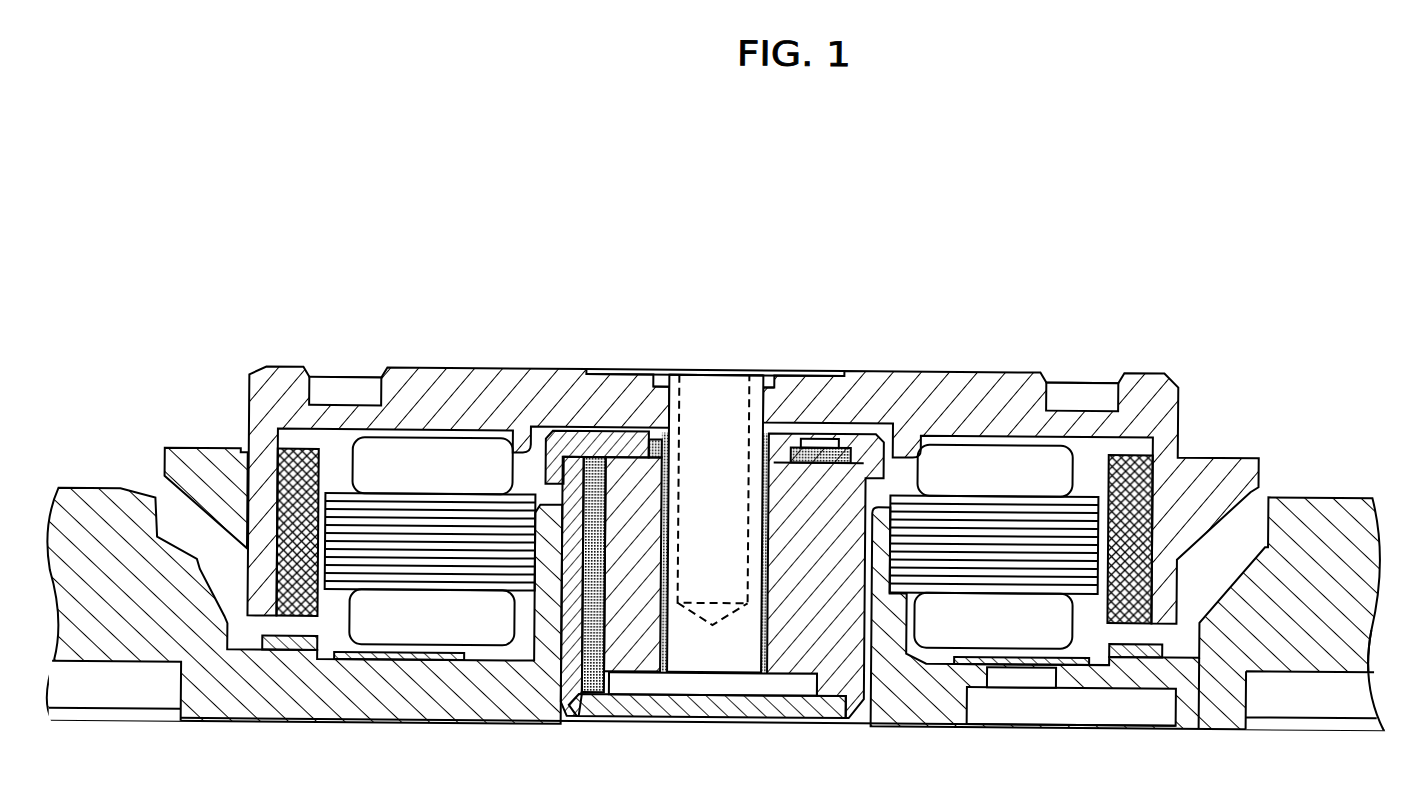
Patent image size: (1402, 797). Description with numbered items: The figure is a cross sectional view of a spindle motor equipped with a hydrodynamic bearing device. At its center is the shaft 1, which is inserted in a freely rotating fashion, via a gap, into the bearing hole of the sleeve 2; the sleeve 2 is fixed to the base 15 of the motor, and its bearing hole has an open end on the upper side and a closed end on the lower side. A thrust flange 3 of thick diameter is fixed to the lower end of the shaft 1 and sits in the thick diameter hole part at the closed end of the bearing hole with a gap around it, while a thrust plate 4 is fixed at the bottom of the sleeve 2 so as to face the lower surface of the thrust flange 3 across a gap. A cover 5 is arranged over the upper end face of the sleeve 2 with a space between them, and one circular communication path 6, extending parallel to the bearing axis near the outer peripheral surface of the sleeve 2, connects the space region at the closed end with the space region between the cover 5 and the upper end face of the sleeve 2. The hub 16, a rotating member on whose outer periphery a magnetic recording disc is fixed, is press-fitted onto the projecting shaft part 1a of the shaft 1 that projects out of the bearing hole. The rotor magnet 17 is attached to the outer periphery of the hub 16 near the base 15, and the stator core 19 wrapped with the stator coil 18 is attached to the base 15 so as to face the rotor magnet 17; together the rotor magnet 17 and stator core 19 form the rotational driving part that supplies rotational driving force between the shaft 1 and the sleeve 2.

The shaft 1 is at (712, 402).
The projecting shaft part 1a is at (668, 389).
The sleeve 2 is at (833, 657).
The thrust flange 3 is at (760, 686).
The thrust plate 4 is at (700, 706).
The cover 5 is at (585, 434).
The circular communication path 6 is at (540, 700).
The base 15 is at (272, 708).
The hub 16 is at (893, 378).
The rotor magnet 17 is at (295, 459).
The stator coil 18 is at (428, 624).
The stator core 19 is at (500, 557).